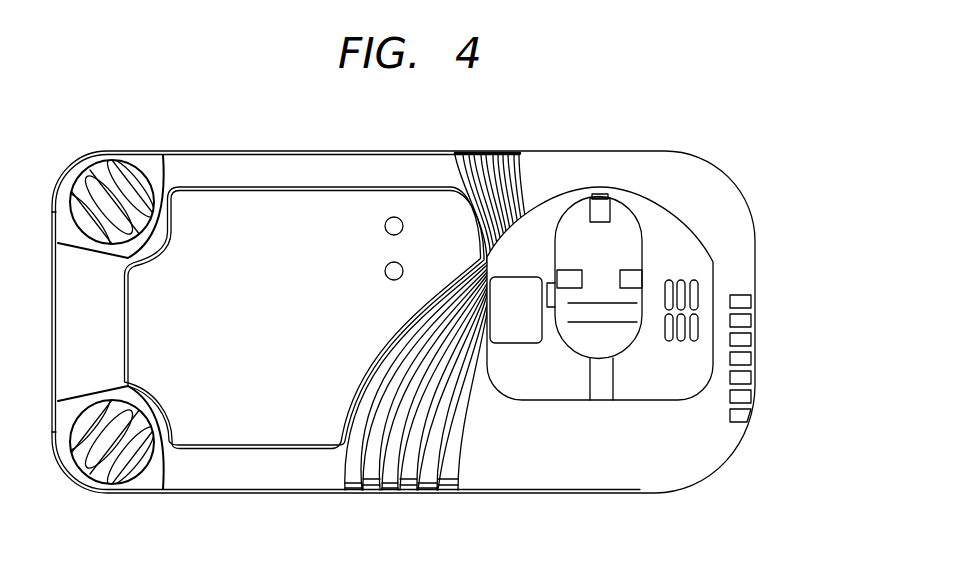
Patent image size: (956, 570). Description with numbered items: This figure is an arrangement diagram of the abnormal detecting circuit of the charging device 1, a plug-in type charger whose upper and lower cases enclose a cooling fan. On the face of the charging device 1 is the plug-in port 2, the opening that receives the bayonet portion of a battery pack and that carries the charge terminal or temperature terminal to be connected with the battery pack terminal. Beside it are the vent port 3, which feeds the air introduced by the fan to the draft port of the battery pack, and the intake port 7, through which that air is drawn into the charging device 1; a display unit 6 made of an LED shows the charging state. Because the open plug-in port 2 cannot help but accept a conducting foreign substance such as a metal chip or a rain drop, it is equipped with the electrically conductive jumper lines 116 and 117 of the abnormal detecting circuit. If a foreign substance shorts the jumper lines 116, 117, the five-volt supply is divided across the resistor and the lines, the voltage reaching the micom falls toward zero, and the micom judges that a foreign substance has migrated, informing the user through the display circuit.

The charging device 1 is at (108, 116).
The plug-in port 2 is at (620, 240).
The vent port 3 is at (697, 288).
The display unit 6 is at (396, 271).
The intake port 7 is at (745, 320).
The jumper line 116 is at (588, 305).
The jumper line 117 is at (615, 323).